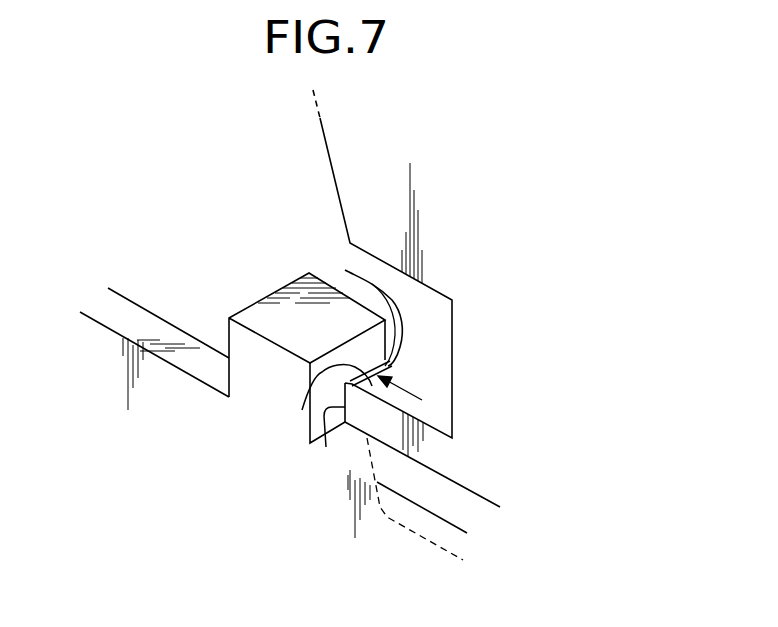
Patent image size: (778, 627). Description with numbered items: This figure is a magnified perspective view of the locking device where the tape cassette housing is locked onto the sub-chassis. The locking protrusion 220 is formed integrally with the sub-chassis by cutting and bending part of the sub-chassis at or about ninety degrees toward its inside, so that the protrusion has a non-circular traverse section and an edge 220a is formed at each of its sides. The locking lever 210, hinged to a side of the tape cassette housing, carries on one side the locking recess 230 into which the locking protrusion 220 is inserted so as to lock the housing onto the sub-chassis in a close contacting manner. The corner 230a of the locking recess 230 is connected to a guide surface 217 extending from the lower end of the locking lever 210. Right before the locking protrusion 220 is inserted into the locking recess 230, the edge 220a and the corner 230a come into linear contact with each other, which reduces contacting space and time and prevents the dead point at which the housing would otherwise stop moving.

The locking lever 210 is at (437, 452).
The guide surface 217 is at (332, 447).
The locking protrusion 220 is at (245, 367).
The edge 220a is at (302, 410).
The locking recess 230 is at (431, 290).
The corner 230a is at (345, 270).